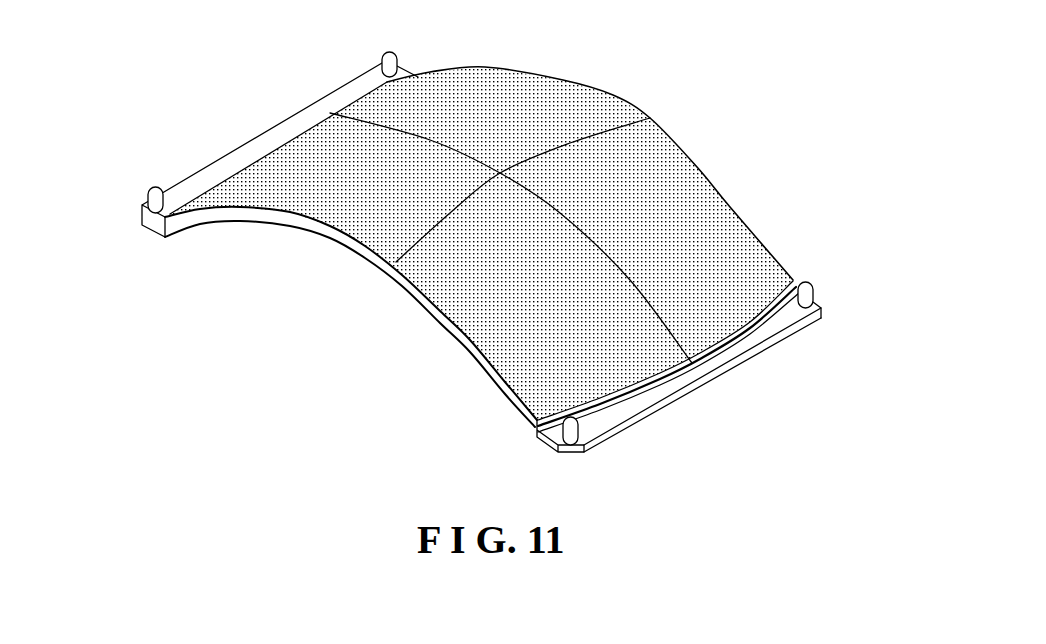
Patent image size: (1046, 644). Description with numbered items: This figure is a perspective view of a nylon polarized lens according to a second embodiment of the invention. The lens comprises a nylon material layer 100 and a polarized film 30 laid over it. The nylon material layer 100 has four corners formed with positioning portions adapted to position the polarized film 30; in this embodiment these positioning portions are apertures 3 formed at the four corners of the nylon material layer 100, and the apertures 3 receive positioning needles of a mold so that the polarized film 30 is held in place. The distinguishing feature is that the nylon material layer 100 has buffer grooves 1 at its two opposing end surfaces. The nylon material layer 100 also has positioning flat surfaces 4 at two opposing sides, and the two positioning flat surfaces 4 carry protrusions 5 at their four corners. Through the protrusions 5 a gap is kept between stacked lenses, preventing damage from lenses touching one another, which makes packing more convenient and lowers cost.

The buffer groove 1 is at (797, 277).
The aperture 3 is at (573, 397).
The positioning flat surface 4 is at (772, 328).
The protrusion 5 is at (580, 432).
The polarized film 30 is at (673, 180).
The nylon material layer 100 is at (413, 295).